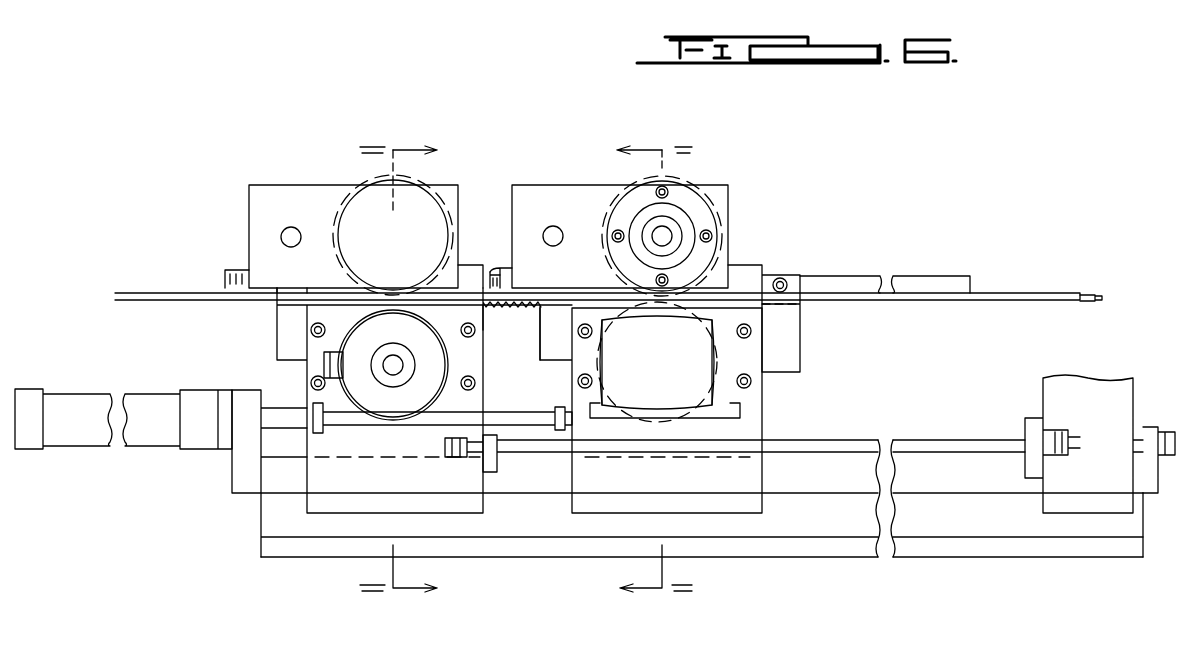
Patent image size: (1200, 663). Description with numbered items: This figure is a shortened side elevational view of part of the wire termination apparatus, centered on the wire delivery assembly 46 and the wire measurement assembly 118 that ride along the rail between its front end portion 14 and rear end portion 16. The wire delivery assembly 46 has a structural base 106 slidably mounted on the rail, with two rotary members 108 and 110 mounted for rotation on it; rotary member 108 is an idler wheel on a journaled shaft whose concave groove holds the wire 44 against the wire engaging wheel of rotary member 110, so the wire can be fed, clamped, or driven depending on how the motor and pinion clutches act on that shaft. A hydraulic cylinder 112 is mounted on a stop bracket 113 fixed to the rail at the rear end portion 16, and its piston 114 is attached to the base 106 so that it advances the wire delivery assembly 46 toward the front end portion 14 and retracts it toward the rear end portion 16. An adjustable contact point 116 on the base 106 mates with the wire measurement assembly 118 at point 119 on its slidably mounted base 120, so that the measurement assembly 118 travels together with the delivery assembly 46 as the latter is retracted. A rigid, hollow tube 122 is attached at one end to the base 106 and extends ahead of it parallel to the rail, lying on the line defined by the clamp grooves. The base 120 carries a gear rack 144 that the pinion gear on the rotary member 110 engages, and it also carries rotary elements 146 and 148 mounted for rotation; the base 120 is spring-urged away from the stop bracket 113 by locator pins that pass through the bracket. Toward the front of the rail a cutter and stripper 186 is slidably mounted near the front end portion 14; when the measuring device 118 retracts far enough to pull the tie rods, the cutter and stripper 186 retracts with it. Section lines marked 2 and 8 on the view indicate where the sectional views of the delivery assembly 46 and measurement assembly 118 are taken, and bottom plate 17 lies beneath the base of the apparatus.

The front end portion 14 is at (1145, 535).
The rear end portion 16 is at (258, 525).
The base plate 17 is at (782, 565).
The wire 44 is at (1088, 294).
The wire delivery assembly 46 is at (758, 262).
The structural base 106 is at (742, 503).
The rotary member 108 is at (705, 187).
The rotary member 110 is at (724, 399).
The hydraulic cylinder 112 is at (153, 400).
The stop bracket 113 is at (243, 474).
The piston 114 is at (525, 400).
The adjustable contact point 116 is at (505, 262).
The wire measurement assembly 118 is at (322, 177).
The point 119 is at (490, 270).
The slidably mounted base 120 is at (335, 505).
The rigid hollow tube 122 is at (1042, 278).
The gear rack 144 is at (510, 307).
The rotary element 146 is at (438, 187).
The rotary element 148 is at (396, 429).
The cutter and stripper 186 is at (1137, 372).
The section line 2 is at (654, 365).
The section line 8 is at (398, 368).